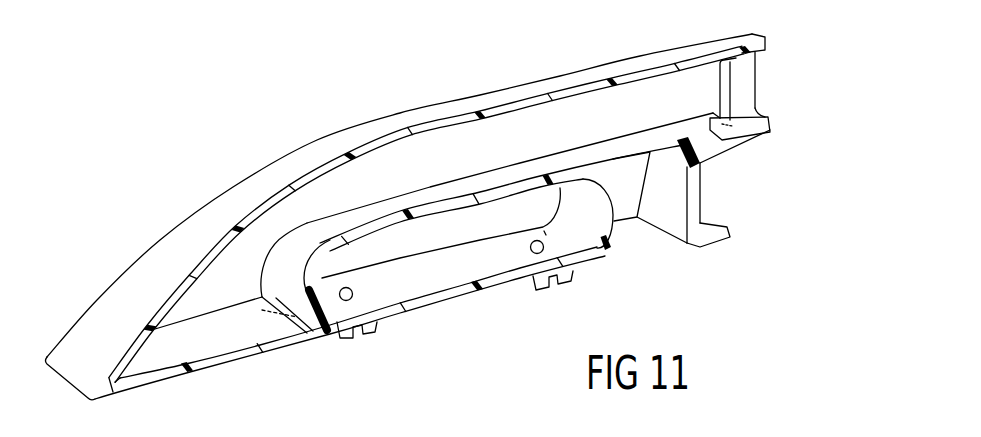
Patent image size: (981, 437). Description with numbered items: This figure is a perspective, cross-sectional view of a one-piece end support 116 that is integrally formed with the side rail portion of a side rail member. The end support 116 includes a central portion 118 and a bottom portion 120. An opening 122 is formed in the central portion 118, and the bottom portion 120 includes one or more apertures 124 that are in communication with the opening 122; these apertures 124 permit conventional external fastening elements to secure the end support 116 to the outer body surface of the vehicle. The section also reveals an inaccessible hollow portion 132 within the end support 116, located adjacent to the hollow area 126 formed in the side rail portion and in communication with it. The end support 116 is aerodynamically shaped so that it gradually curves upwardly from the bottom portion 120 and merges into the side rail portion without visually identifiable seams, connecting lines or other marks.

The end support 116 is at (108, 263).
The central portion 118 is at (250, 216).
The bottom portion 120 is at (212, 368).
The opening 122 is at (482, 262).
The apertures 124 is at (353, 293).
The hollow area 126 is at (754, 100).
The hollow portion 132 is at (670, 133).